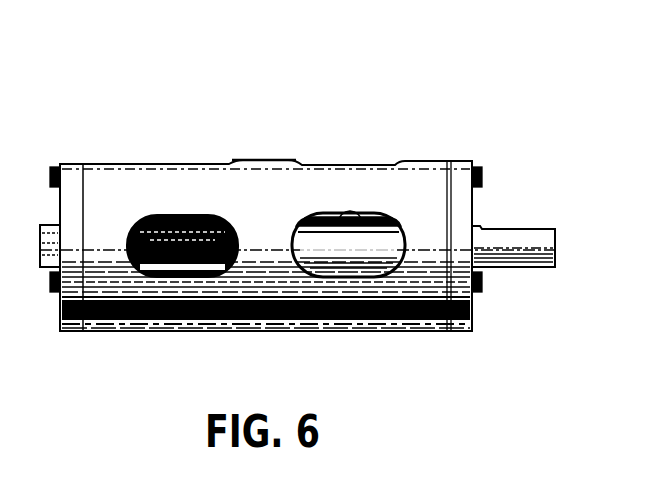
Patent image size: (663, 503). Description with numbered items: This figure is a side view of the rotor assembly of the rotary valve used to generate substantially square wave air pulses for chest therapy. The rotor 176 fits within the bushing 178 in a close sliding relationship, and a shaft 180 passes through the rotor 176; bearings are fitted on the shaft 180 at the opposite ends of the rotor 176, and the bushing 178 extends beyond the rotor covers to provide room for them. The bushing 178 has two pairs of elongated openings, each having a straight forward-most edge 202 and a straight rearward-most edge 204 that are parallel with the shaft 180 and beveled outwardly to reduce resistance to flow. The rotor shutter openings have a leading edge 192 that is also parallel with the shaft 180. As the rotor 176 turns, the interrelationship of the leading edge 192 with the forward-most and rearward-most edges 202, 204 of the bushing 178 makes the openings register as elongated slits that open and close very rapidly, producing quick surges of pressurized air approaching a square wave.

The rotor 176 is at (372, 222).
The bushing 178 is at (252, 150).
The shaft 180 is at (528, 228).
The leading edge 192 is at (356, 240).
The forward-most edge 202 is at (323, 268).
The rearward-most edge 204 is at (325, 226).